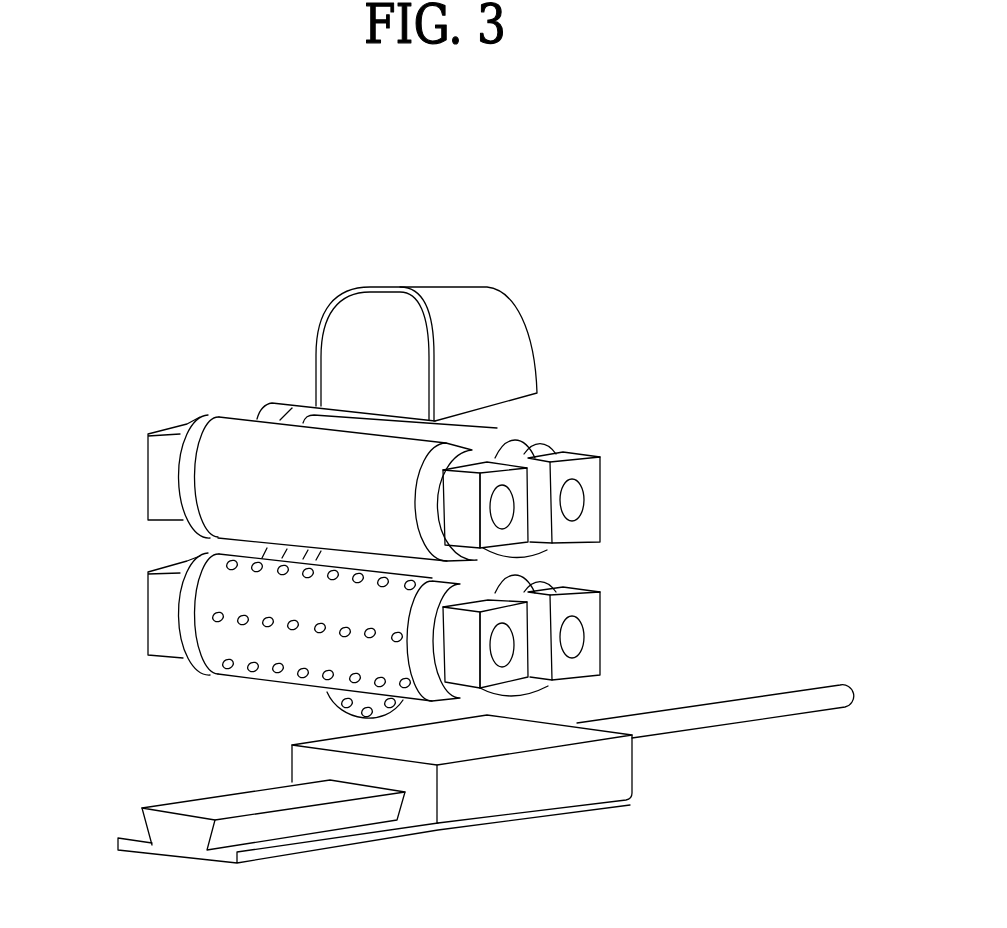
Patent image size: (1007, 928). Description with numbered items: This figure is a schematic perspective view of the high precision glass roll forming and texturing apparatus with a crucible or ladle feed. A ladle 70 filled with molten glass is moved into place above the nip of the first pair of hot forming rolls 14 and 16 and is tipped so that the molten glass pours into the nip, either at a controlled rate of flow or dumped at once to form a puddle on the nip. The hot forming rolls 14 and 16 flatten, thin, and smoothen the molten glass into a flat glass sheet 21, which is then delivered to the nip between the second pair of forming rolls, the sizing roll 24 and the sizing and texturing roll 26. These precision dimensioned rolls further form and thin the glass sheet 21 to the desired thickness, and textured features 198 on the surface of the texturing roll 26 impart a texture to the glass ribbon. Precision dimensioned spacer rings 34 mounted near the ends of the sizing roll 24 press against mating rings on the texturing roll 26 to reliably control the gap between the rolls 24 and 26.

The ladle 70 is at (442, 303).
The hot forming roll 14 is at (232, 432).
The glass sheet 21 is at (330, 557).
The hot forming roll 16 is at (490, 436).
The sizing and texturing roll 26 is at (553, 576).
The spacer ring 34 is at (197, 612).
The sizing roll 24 is at (232, 638).
The textured features 198 is at (318, 631).